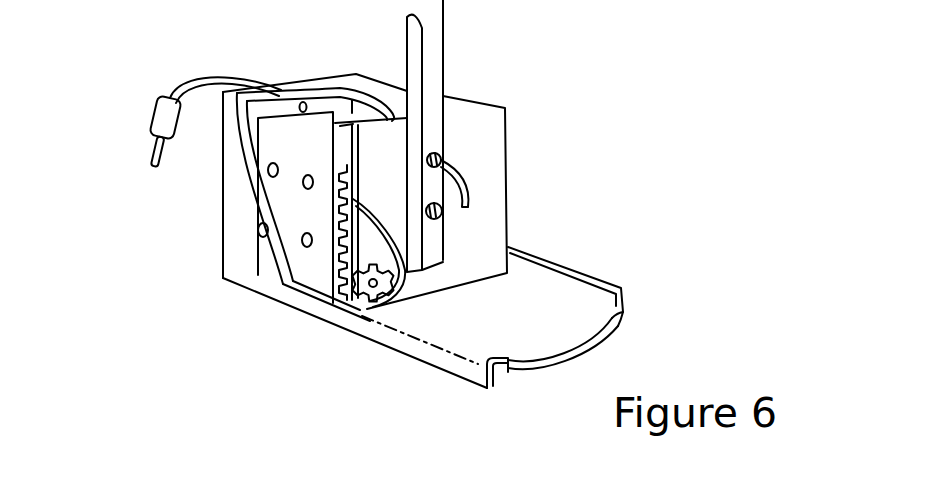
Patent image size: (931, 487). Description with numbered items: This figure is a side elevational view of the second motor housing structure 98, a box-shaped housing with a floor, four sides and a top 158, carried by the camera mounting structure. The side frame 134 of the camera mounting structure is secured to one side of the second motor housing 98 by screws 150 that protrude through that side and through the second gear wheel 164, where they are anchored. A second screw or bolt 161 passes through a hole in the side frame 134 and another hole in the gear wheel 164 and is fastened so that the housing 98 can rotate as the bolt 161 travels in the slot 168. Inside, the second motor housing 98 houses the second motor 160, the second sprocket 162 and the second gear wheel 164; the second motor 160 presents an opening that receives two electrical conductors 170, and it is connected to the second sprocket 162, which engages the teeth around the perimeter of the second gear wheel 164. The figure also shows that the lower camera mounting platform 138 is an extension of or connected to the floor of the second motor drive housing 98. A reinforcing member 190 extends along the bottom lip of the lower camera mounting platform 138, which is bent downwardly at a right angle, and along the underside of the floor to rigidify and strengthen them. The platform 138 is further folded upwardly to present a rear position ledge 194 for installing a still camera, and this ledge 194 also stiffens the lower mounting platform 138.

The second motor housing structure 98 is at (520, 180).
The side frame 134 is at (445, 33).
The lower camera mounting platform 138 is at (553, 312).
The screws 150 is at (446, 213).
The top 158 is at (331, 73).
The second motor 160 is at (287, 183).
The second screw or bolt 161 is at (437, 152).
The second sprocket 162 is at (353, 293).
The second gear wheel 164 is at (350, 232).
The slot 168 is at (461, 163).
The electrical conductors 170 is at (198, 76).
The reinforcing member 190 is at (511, 372).
The rear position ledge 194 is at (577, 273).